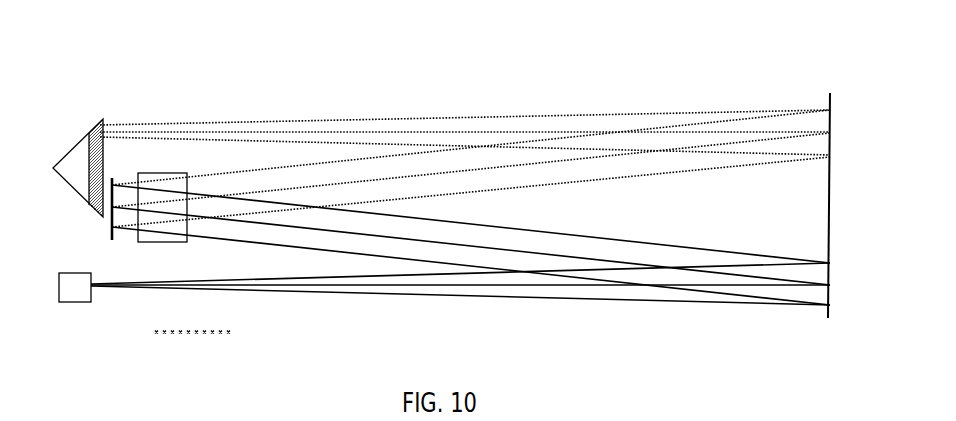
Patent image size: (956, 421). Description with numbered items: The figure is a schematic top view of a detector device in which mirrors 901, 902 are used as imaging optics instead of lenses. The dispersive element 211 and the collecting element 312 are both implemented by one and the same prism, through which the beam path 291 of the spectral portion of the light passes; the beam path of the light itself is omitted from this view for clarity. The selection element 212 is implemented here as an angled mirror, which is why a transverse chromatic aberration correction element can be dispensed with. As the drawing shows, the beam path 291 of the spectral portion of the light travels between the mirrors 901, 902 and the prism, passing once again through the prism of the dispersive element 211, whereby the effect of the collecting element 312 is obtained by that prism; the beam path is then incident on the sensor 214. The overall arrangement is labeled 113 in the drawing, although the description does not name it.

The display system 113 is at (446, 174).
The selection element 212 is at (73, 169).
The dispersive element 211 is at (166, 190).
The collecting element 312 is at (166, 190).
The mirror 901 is at (122, 227).
The sensor 214 is at (68, 264).
The mirror 902 is at (835, 183).
The beam path of the spectral portion of the light 291 is at (460, 189).